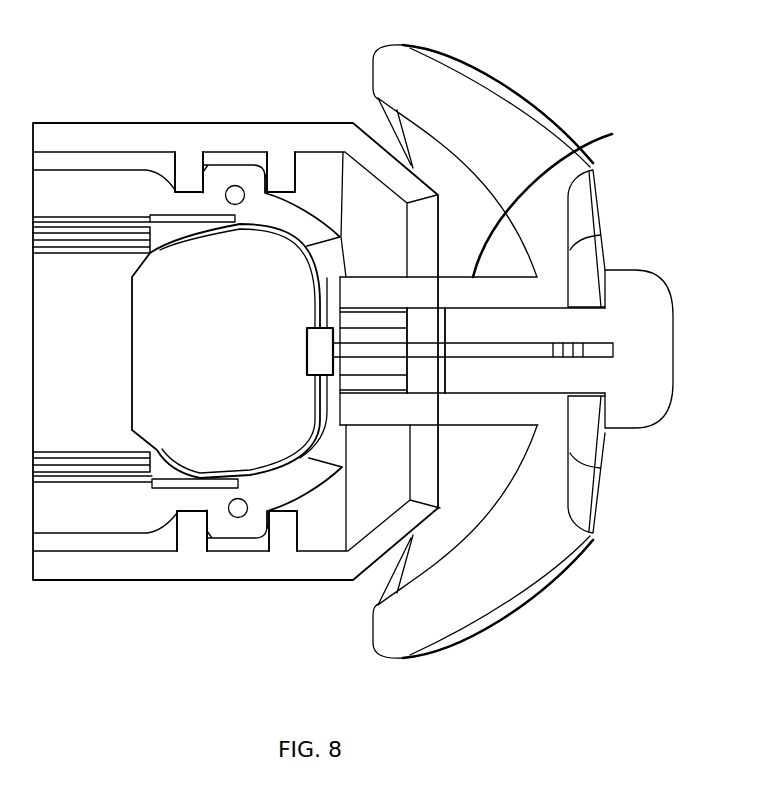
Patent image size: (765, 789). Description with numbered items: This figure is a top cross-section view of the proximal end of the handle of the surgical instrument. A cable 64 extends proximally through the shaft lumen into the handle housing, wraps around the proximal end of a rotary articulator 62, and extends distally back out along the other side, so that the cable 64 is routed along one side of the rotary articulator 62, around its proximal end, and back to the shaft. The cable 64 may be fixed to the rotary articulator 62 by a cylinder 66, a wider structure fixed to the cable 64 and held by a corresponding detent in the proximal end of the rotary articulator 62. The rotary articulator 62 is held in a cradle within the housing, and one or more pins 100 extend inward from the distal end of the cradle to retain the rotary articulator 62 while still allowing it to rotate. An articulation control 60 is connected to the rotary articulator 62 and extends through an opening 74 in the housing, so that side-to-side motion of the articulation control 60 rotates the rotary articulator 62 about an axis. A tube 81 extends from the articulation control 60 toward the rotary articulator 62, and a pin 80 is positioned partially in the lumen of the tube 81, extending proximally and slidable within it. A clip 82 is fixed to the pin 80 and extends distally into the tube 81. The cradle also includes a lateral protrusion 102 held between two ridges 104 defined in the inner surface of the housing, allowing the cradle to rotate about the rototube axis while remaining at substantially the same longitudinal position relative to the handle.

The articulation control 60 is at (492, 66).
The rotary articulator 62 is at (132, 368).
The cable 64 is at (90, 222).
The cylinder 66 is at (307, 351).
The opening 74 is at (455, 461).
The pin 80 is at (676, 347).
The tube 81 is at (612, 136).
The clip 82 is at (453, 358).
The pin 100 is at (158, 448).
The lateral protrusion 102 is at (238, 164).
The ridge 104 is at (175, 160).